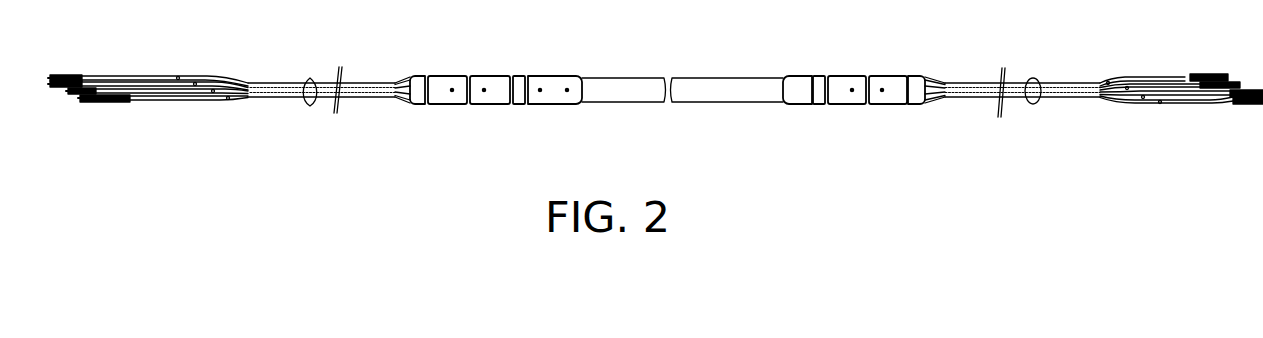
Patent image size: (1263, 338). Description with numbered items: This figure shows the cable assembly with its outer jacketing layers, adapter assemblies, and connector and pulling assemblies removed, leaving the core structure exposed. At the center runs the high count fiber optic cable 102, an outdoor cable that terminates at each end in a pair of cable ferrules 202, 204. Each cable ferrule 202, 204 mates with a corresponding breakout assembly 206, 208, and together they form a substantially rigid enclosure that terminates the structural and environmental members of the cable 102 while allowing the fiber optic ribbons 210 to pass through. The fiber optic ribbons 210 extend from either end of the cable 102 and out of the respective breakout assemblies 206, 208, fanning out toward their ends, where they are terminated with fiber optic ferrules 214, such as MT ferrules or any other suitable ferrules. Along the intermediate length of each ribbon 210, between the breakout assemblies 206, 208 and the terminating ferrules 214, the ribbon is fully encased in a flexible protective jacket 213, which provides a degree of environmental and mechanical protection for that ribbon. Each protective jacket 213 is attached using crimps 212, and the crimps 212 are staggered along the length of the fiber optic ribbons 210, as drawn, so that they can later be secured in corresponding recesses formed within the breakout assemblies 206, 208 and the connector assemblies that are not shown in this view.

The high count fiber optic cable 102 is at (680, 77).
The cable ferrule 202 is at (548, 76).
The cable ferrule 204 is at (792, 106).
The breakout assembly 206 is at (470, 106).
The breakout assembly 208 is at (848, 77).
The fiber optic ribbons 210 is at (310, 106).
The crimps 212 is at (178, 78).
The protective jacket 213 is at (267, 82).
The fiber optic ferrules 214 is at (103, 108).